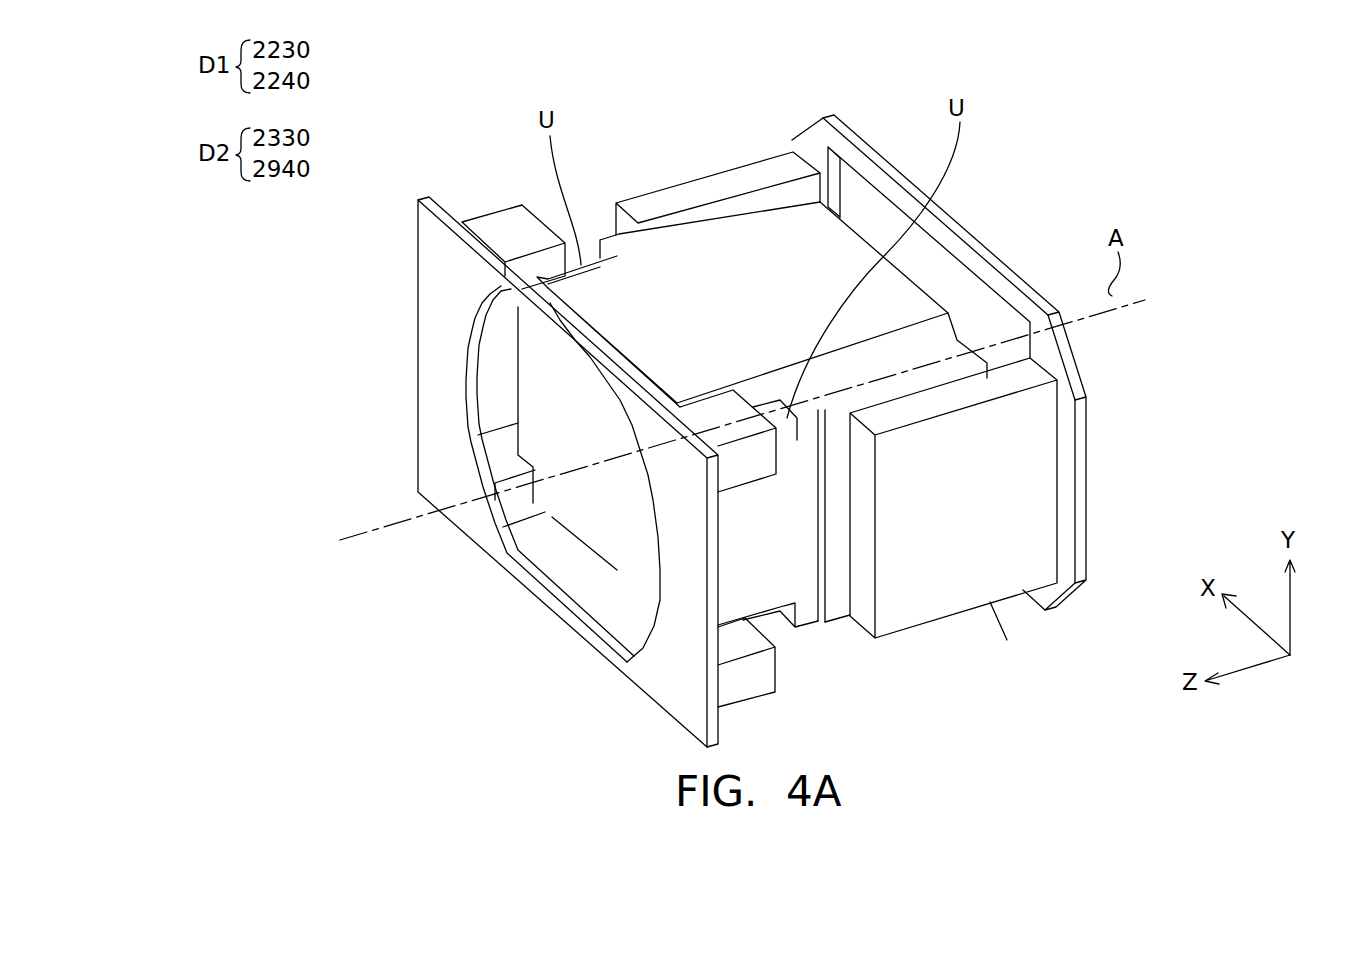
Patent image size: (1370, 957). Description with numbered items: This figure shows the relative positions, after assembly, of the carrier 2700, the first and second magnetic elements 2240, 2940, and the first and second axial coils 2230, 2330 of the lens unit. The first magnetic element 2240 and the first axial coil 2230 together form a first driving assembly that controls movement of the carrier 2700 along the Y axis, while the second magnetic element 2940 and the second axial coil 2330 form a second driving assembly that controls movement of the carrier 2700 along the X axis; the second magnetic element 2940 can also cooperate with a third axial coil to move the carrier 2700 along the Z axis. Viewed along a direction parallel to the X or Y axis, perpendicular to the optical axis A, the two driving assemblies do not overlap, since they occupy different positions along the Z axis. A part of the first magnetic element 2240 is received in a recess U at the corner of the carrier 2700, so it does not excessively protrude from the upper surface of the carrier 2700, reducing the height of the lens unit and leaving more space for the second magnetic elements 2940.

The first axial coil 2230 is at (443, 298).
The first magnetic element 2240 is at (510, 236).
The second axial coil 2330 is at (1085, 488).
The second magnetic element 2940 is at (683, 197).
The carrier 2700 is at (766, 256).